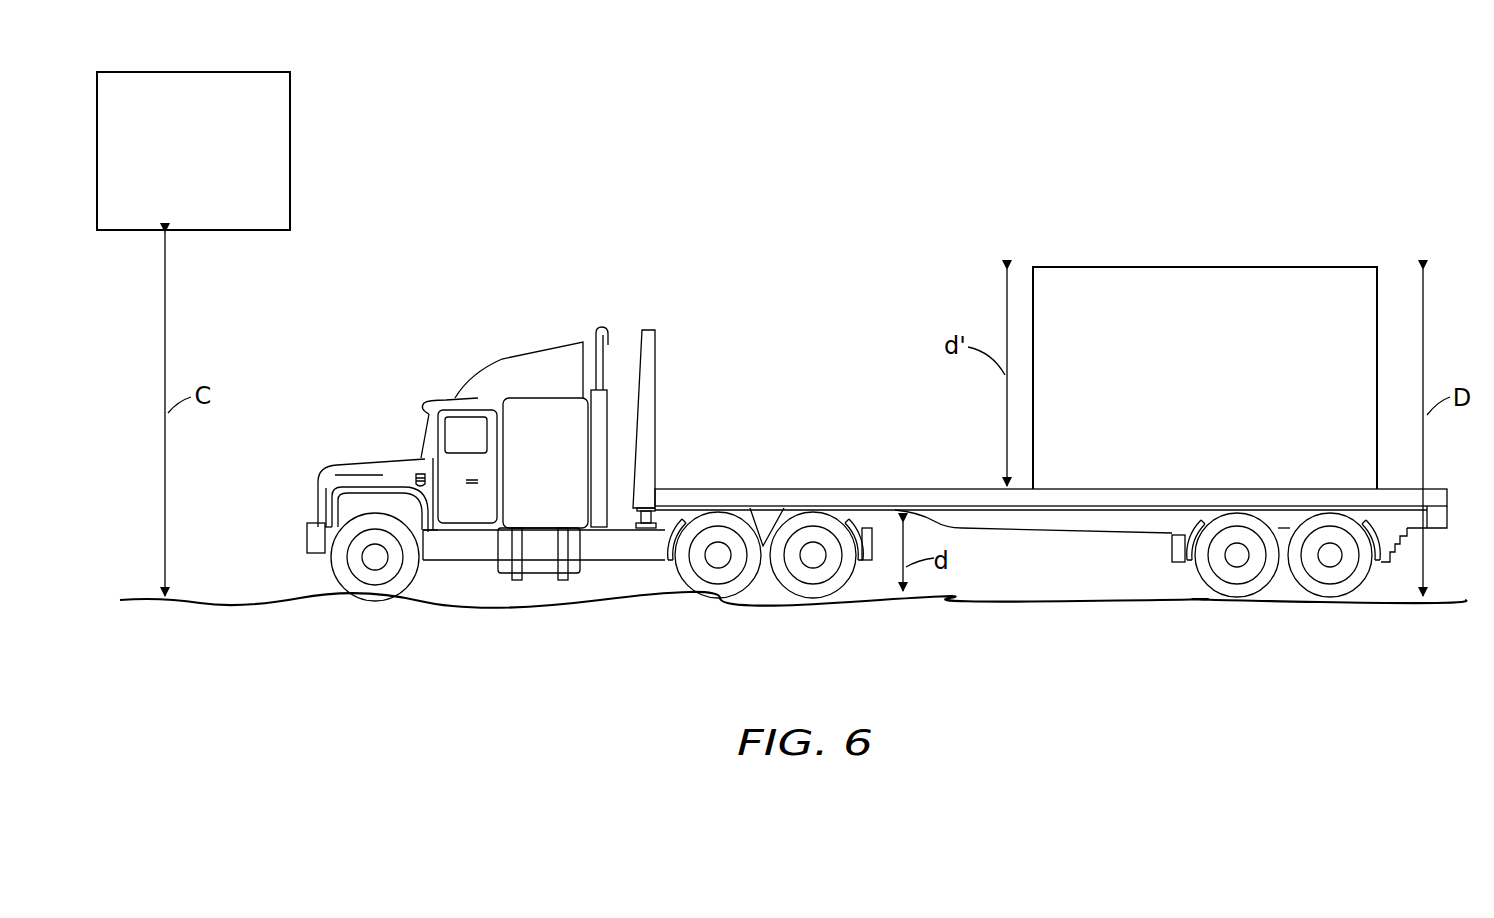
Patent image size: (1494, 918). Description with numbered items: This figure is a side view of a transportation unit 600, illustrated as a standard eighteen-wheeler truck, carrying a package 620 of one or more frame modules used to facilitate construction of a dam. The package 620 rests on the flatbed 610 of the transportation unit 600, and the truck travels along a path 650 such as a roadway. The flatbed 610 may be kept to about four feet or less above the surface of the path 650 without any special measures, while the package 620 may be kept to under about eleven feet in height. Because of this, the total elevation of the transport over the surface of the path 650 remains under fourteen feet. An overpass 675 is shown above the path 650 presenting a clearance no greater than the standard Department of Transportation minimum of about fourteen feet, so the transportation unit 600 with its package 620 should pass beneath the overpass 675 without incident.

The transportation unit 600 is at (601, 292).
The flatbed 610 is at (775, 488).
The package 620 is at (1182, 392).
The path 650 is at (220, 598).
The overpass 675 is at (166, 162).